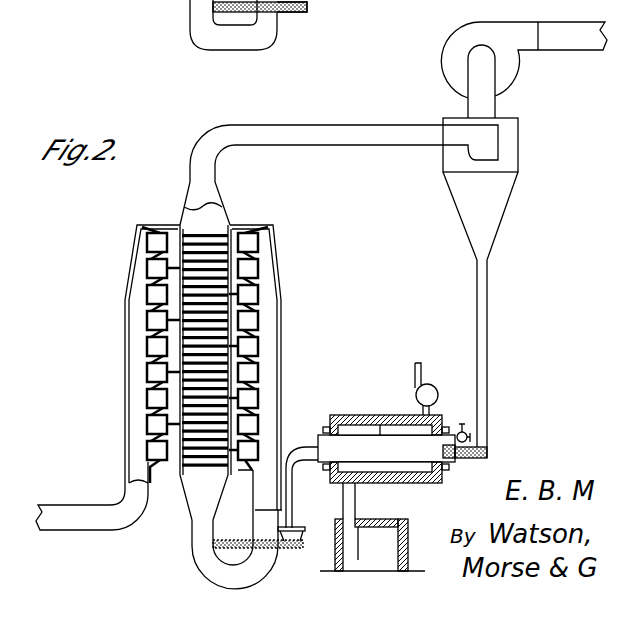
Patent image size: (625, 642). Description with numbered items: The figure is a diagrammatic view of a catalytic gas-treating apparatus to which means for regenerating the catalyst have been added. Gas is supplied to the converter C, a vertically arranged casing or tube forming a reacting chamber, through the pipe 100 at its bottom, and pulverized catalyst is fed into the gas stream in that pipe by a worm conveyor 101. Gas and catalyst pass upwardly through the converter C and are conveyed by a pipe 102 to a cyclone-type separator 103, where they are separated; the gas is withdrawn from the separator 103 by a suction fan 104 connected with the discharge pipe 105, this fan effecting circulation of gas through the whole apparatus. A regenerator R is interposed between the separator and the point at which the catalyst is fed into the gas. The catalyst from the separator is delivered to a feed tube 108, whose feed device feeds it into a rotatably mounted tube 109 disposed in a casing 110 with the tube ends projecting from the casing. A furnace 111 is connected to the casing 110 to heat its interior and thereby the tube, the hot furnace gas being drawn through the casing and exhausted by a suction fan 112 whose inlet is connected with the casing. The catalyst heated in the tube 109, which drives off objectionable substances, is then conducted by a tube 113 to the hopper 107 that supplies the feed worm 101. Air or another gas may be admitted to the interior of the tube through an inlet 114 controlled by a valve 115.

The pipe 100 is at (208, 25).
The worm conveyor 101 is at (232, 544).
The pipe 102 is at (388, 140).
The separator 103 is at (512, 191).
The suction fan 104 is at (518, 27).
The discharge pipe 105 is at (490, 103).
The hopper 107 is at (305, 532).
The feed tube 108 is at (465, 459).
The rotatably mounted tube 109 is at (403, 455).
The casing 110 is at (398, 413).
The furnace 111 is at (408, 529).
The suction fan 112 is at (433, 398).
The tube 113 is at (305, 487).
The inlet 114 is at (467, 426).
The valve 115 is at (470, 438).
The converter C is at (233, 345).
The regenerator R is at (330, 415).